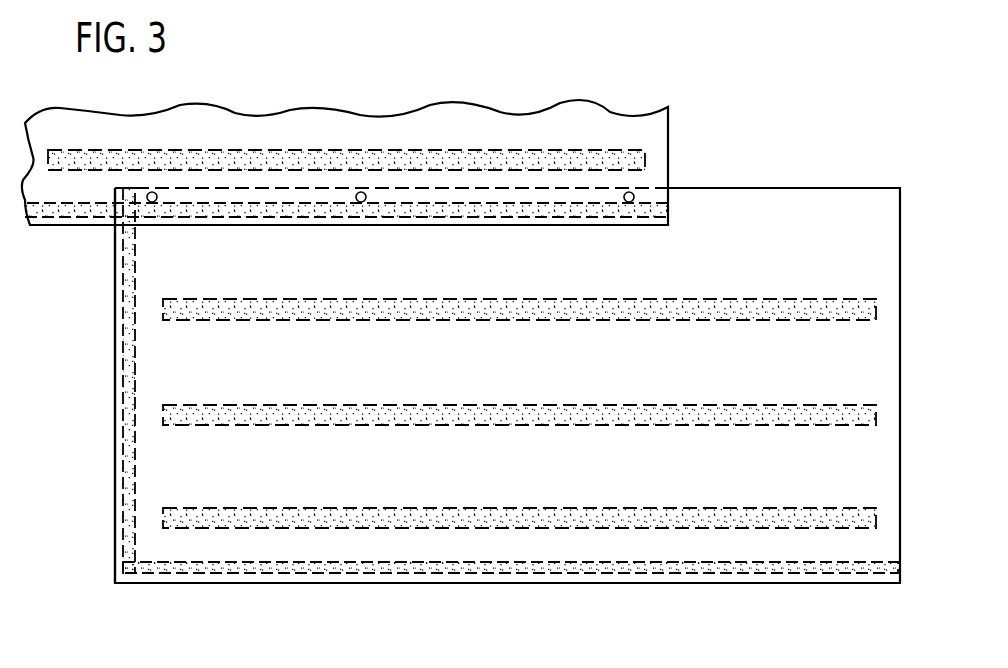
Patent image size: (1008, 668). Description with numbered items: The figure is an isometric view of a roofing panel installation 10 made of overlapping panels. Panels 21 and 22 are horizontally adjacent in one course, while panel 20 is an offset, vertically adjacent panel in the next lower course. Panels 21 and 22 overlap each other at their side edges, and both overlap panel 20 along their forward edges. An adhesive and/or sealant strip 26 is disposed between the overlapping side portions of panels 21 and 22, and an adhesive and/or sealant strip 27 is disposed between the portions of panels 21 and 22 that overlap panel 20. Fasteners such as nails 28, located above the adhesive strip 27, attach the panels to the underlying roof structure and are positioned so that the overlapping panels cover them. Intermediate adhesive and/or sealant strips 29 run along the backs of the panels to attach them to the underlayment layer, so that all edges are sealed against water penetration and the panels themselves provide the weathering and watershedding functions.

The display device 10 is at (740, 153).
The panel 20 is at (535, 584).
The panel 21 is at (545, 132).
The panel 22 is at (571, 373).
The adhesive and/or sealant strip 26 is at (130, 370).
The adhesive and/or sealant strip 27 is at (352, 568).
The nails 28 is at (361, 202).
The intermediate adhesive and/or sealant strips 29 is at (310, 157).